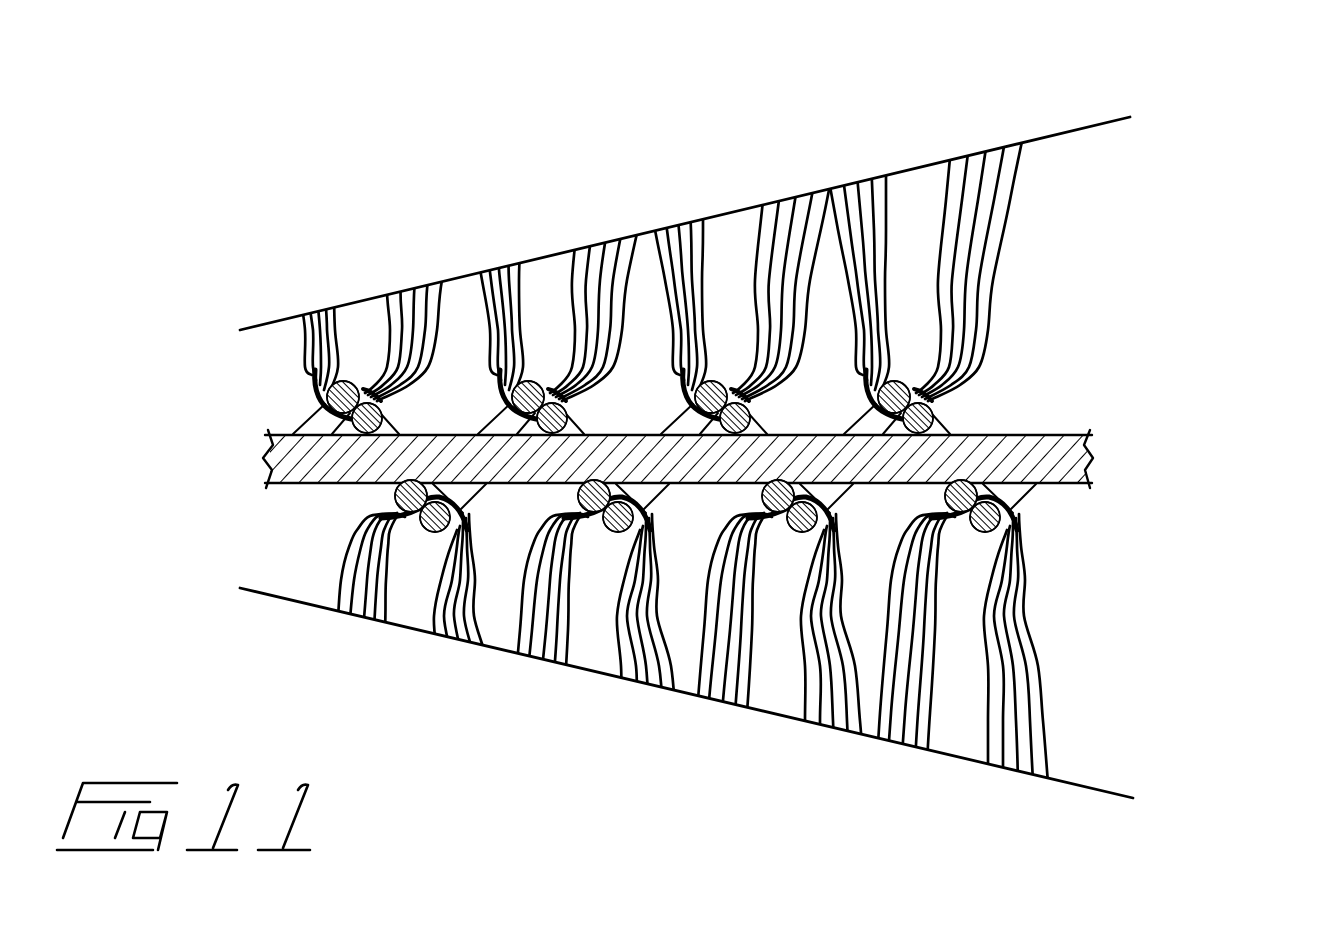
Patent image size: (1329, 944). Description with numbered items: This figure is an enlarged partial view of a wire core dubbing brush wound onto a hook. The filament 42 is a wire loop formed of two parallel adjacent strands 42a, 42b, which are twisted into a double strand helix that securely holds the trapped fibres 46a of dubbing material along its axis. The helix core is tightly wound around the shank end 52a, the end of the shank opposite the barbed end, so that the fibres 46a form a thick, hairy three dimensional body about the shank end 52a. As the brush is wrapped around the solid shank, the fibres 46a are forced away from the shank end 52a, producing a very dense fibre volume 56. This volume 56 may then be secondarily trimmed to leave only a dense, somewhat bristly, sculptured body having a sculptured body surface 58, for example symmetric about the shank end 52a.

The filament 42 is at (307, 373).
The strand 42a is at (395, 485).
The strand 42b is at (323, 390).
The fibres 46a is at (710, 242).
The shank end 52a is at (1065, 486).
The fibre volume 56 is at (1110, 190).
The sculptured body surface 58 is at (912, 167).